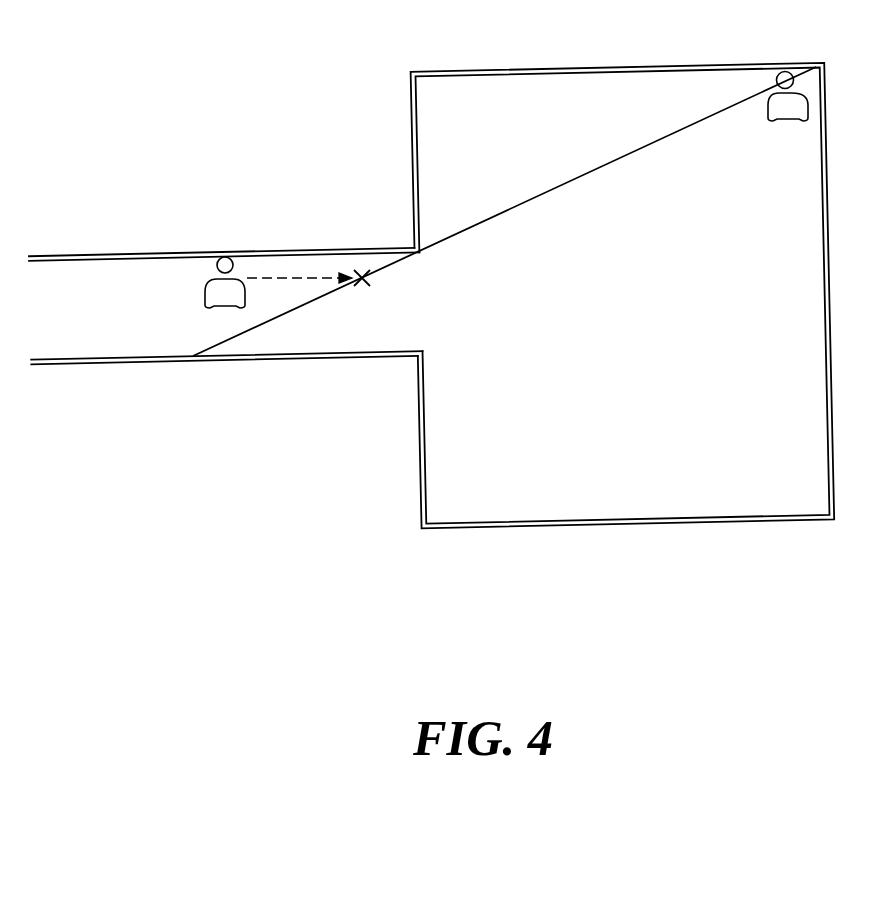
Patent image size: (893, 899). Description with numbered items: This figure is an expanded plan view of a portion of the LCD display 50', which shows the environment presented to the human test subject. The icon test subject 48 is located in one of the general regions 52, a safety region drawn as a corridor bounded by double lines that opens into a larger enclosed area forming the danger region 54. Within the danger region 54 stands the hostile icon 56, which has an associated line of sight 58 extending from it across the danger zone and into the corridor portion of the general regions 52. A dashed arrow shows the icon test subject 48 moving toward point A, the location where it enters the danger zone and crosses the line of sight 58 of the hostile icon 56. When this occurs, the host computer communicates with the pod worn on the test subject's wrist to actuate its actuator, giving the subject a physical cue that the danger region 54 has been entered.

The icon test subject 48 is at (226, 257).
The LCD display 50' is at (275, 592).
The general regions 52 is at (83, 327).
The danger region 54 is at (637, 442).
The hostile icon 56 is at (786, 71).
The line of sight 58 is at (609, 163).
The point A is at (362, 288).